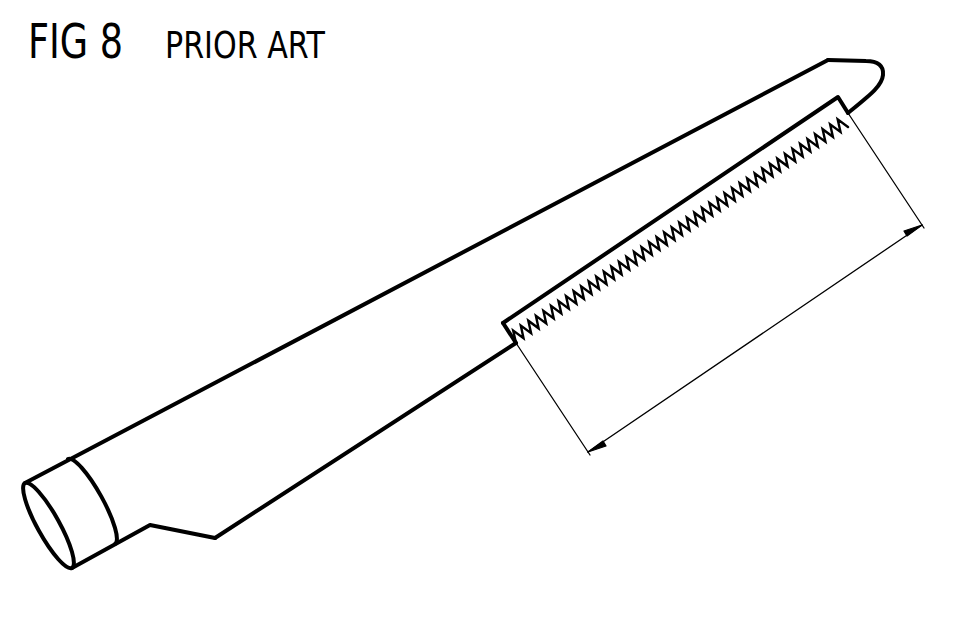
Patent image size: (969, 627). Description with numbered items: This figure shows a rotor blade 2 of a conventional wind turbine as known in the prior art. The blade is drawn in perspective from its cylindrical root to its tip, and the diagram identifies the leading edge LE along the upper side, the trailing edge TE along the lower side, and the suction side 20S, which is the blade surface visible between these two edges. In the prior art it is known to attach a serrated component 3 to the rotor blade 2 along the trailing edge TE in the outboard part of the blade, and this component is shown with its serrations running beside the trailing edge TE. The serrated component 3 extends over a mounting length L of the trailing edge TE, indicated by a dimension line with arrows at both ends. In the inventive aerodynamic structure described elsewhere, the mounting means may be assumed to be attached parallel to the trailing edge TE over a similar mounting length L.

The rotor blade 2 is at (449, 294).
The serrated component 3 is at (722, 240).
The suction side 20S is at (426, 299).
The leading edge LE is at (410, 279).
The trailing edge TE is at (415, 405).
The mounting length L is at (753, 340).